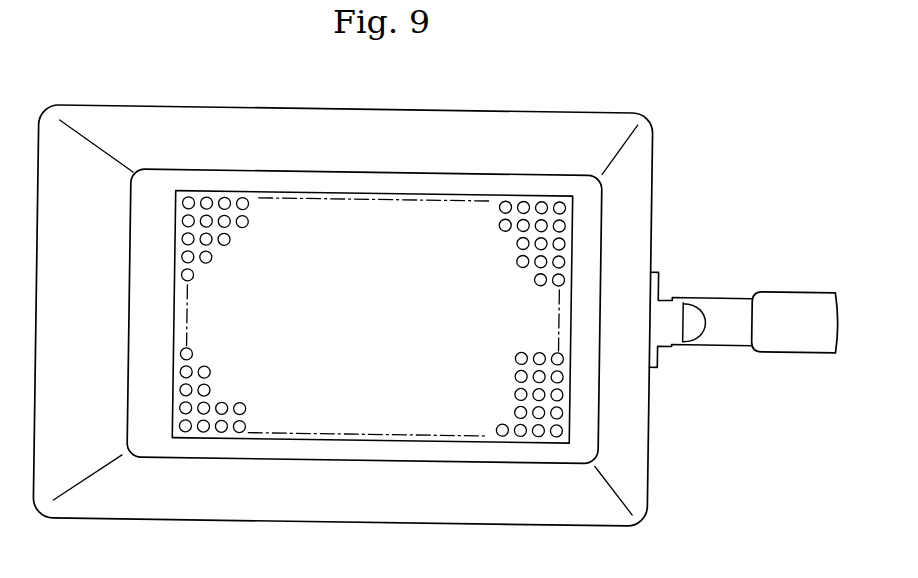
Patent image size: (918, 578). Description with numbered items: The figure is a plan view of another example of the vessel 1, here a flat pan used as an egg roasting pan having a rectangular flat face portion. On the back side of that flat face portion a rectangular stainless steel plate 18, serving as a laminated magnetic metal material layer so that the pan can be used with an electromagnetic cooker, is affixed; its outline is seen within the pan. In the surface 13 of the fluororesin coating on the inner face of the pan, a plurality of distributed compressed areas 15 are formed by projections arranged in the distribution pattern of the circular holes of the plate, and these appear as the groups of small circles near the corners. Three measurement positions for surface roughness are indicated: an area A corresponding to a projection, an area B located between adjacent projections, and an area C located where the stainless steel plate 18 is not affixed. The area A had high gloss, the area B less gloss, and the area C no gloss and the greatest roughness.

The vessel 1 is at (648, 158).
The surface 13 is at (420, 184).
The compressed areas 15 is at (319, 279).
The stainless steel plate 18 is at (266, 435).
The area A is at (184, 208).
The area B is at (182, 236).
The area C is at (142, 344).